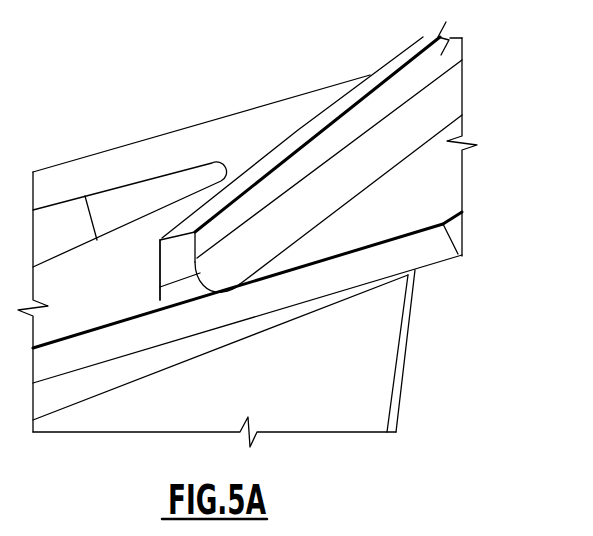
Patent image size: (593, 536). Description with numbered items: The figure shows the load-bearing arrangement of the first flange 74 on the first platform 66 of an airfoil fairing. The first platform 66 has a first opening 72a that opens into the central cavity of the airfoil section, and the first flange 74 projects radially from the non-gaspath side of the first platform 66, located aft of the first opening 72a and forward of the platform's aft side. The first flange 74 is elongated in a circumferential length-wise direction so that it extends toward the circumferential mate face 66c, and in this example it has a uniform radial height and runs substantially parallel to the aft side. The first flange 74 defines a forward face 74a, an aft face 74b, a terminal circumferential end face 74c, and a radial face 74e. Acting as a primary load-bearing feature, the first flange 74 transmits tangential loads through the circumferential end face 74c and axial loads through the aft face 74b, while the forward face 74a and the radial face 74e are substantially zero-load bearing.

The first opening 72a is at (162, 190).
The first flange 74 is at (298, 180).
The forward face 74a is at (158, 257).
The aft face 74b is at (390, 96).
The terminal circumferential end face 74c is at (177, 258).
The radial face 74e is at (304, 128).
The first platform 66 is at (456, 242).
The circumferential mate face 66c is at (432, 253).